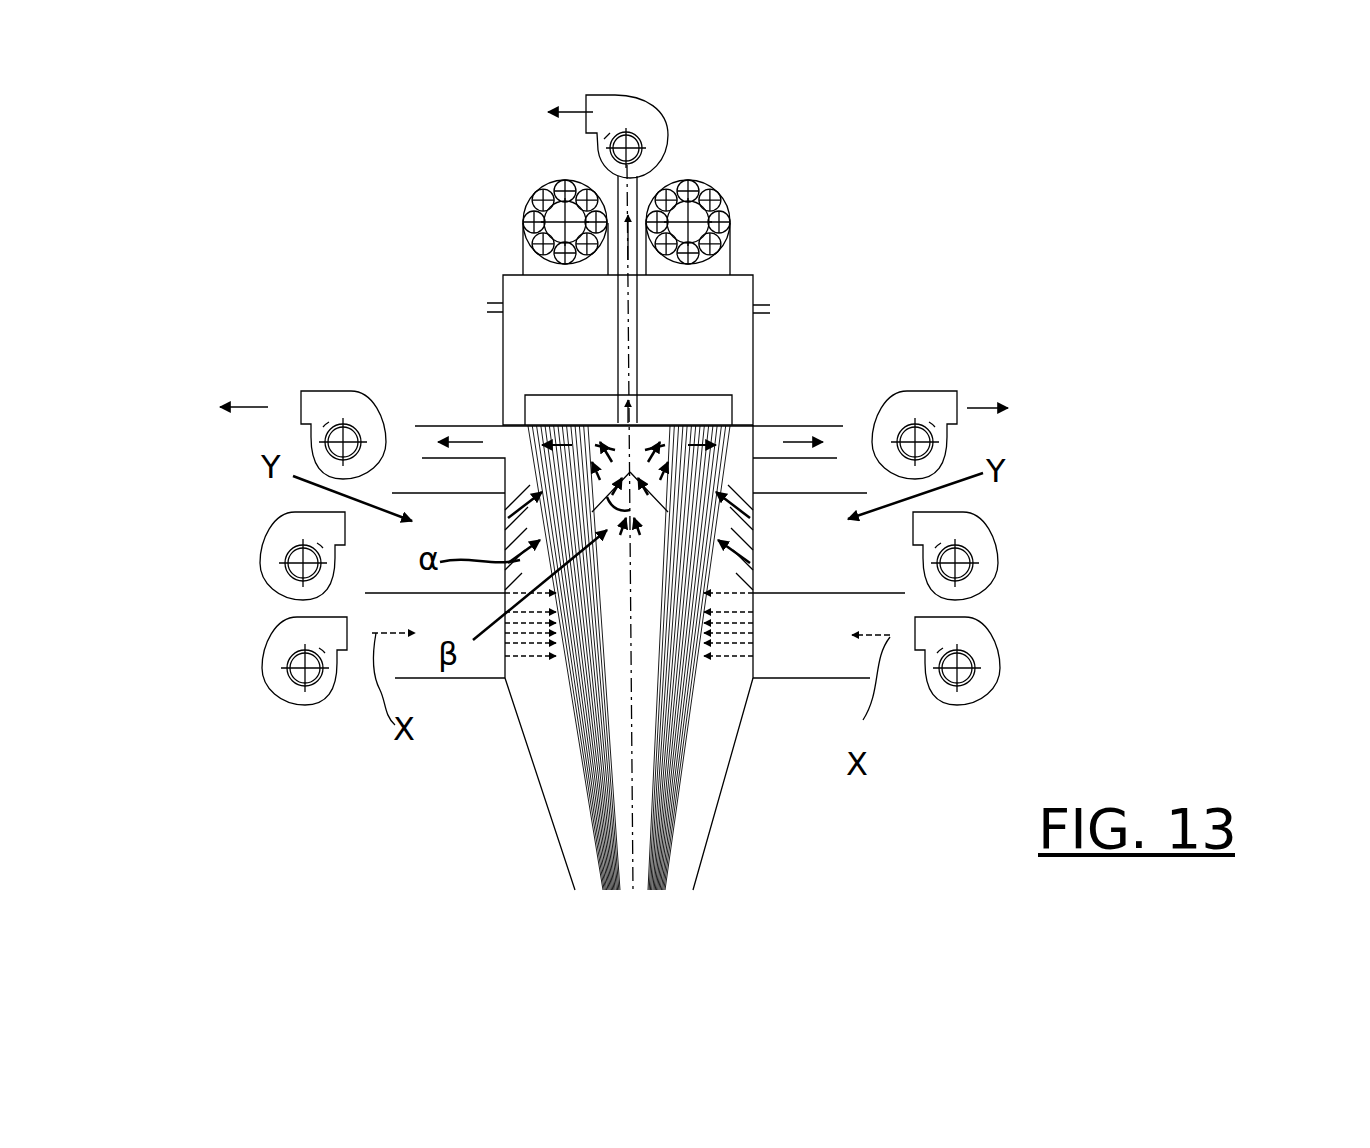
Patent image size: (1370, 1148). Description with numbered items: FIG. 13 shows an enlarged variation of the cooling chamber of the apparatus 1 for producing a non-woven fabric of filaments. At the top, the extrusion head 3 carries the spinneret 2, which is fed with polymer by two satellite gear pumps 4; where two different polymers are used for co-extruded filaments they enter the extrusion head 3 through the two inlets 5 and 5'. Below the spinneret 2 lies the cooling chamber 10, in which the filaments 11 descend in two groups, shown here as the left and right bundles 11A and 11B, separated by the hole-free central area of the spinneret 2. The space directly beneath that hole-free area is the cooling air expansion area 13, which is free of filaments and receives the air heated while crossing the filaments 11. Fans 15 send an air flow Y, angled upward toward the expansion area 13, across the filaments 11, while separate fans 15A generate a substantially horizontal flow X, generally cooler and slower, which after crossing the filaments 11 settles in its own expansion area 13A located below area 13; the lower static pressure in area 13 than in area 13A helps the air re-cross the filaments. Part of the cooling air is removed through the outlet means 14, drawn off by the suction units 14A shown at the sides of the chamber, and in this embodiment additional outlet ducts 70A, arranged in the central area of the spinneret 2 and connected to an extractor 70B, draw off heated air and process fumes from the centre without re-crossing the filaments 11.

The apparatus 1 is at (1160, 492).
The spinneret 2 is at (706, 412).
The extrusion head 3 is at (645, 328).
The satellite gear pumps 4 is at (543, 188).
The inlet 5 is at (442, 286).
The inlet 5' is at (834, 279).
The cooling chamber 10 is at (540, 678).
The filaments 11 is at (580, 720).
The left fibre stream 11A is at (565, 440).
The right fibre stream 11B is at (686, 440).
The cooling air expansion area 13 is at (712, 497).
The expansion area of flow X 13A is at (637, 527).
The outlet means 14 is at (455, 420).
The suction fans 14A is at (325, 395).
The fans 15 is at (283, 497).
The fans 15A is at (305, 706).
The outlet ducts 70A is at (636, 232).
The extractor 70B is at (584, 134).